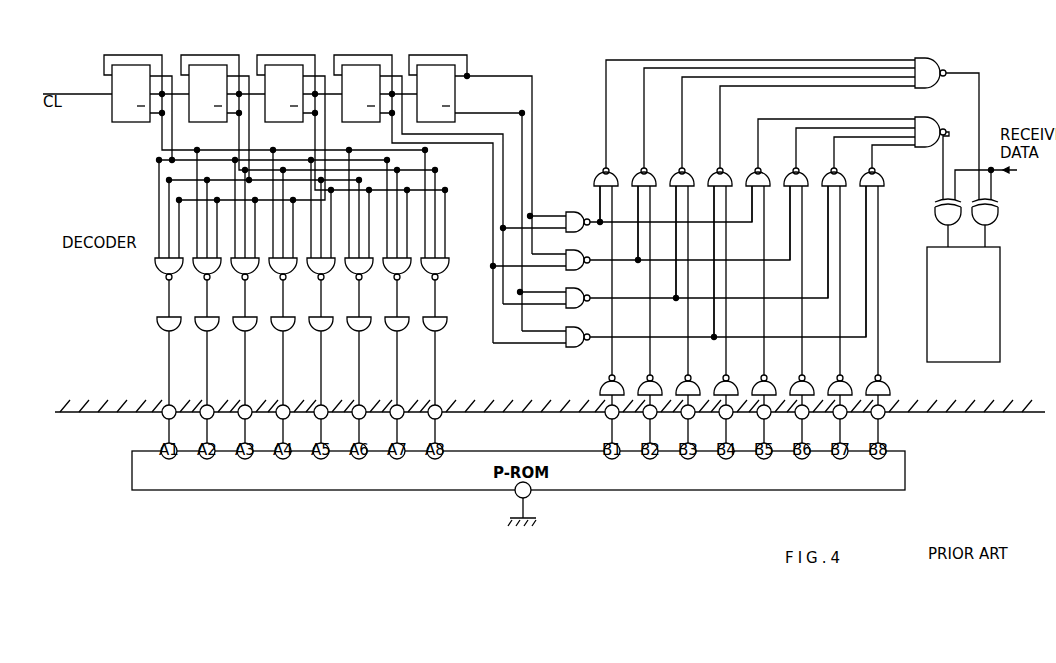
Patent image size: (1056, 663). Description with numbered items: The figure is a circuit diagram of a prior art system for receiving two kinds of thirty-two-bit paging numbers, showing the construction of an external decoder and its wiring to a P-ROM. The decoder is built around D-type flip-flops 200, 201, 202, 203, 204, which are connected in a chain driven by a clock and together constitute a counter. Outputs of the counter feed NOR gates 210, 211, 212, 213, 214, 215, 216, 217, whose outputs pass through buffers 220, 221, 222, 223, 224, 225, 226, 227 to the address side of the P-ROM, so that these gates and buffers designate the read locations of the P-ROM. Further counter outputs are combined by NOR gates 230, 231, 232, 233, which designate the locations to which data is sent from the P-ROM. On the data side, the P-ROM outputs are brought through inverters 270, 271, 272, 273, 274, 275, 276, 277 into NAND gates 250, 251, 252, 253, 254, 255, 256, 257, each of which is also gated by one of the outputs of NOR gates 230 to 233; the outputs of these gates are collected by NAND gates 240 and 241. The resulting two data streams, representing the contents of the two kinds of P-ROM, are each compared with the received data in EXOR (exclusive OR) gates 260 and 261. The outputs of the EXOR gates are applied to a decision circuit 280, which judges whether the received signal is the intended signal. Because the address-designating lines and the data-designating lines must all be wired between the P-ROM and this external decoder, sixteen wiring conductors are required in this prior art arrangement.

The D-type flip-flop 200 is at (130, 122).
The D-type flip-flop 201 is at (207, 122).
The D-type flip-flop 202 is at (283, 122).
The D-type flip-flop 203 is at (360, 122).
The D-type flip-flop 204 is at (456, 97).
The NOR gate 210 is at (163, 281).
The NOR gate 211 is at (201, 281).
The NOR gate 212 is at (239, 281).
The NOR gate 213 is at (277, 281).
The NOR gate 214 is at (315, 281).
The NOR gate 215 is at (353, 281).
The NOR gate 216 is at (391, 281).
The NOR gate 217 is at (429, 281).
The buffer 220 is at (163, 333).
The buffer 221 is at (201, 333).
The buffer 222 is at (239, 333).
The buffer 223 is at (277, 333).
The buffer 224 is at (315, 333).
The buffer 225 is at (353, 333).
The buffer 226 is at (391, 333).
The buffer 227 is at (429, 333).
The NOR gate 230 is at (578, 202).
The NOR gate 231 is at (578, 250).
The NOR gate 232 is at (578, 288).
The NOR gate 233 is at (578, 327).
The NAND gate 240 is at (930, 57).
The NAND gate 241 is at (930, 116).
The NAND gate 250 is at (610, 168).
The NAND gate 251 is at (648, 168).
The NAND gate 252 is at (686, 168).
The NAND gate 253 is at (724, 168).
The NAND gate 254 is at (762, 168).
The NAND gate 255 is at (800, 168).
The NAND gate 256 is at (838, 170).
The NAND gate 257 is at (880, 178).
The EXOR gate 260 is at (932, 215).
The EXOR gate 261 is at (1000, 215).
The inverter 270 is at (616, 375).
The inverter 271 is at (654, 375).
The inverter 272 is at (692, 375).
The inverter 273 is at (730, 375).
The inverter 274 is at (768, 375).
The inverter 275 is at (806, 375).
The inverter 276 is at (844, 375).
The inverter 277 is at (882, 375).
The decision circuit 280 is at (963, 362).